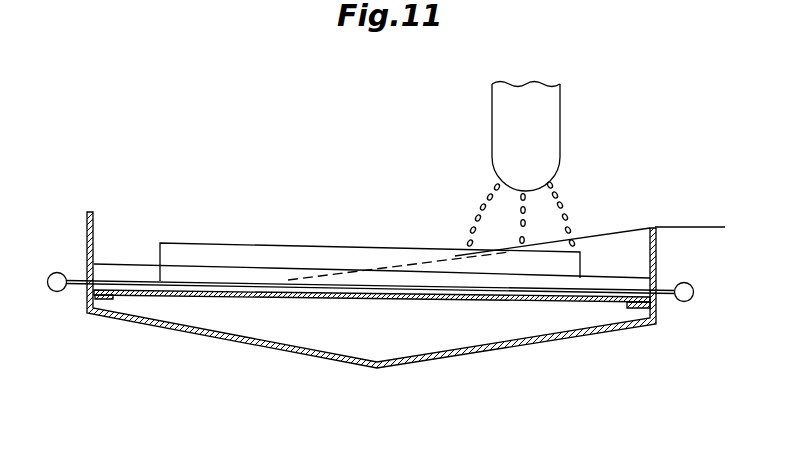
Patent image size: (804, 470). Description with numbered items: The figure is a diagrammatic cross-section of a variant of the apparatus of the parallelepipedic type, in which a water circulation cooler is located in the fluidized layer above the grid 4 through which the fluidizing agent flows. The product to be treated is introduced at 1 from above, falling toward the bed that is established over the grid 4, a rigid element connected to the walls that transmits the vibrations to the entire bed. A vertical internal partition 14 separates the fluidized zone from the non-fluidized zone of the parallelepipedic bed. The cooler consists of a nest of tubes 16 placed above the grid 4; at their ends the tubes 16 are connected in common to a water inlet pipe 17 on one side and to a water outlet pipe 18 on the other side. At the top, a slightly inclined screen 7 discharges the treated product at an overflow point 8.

The product inlet 1 is at (555, 126).
The grid 4 is at (248, 297).
The screen 7 is at (600, 234).
The overflow point 8 is at (707, 228).
The vertical internal partition 14 is at (207, 242).
The nest of tubes 16 is at (497, 298).
The water inlet pipe 17 is at (57, 271).
The water outlet pipe 18 is at (687, 302).